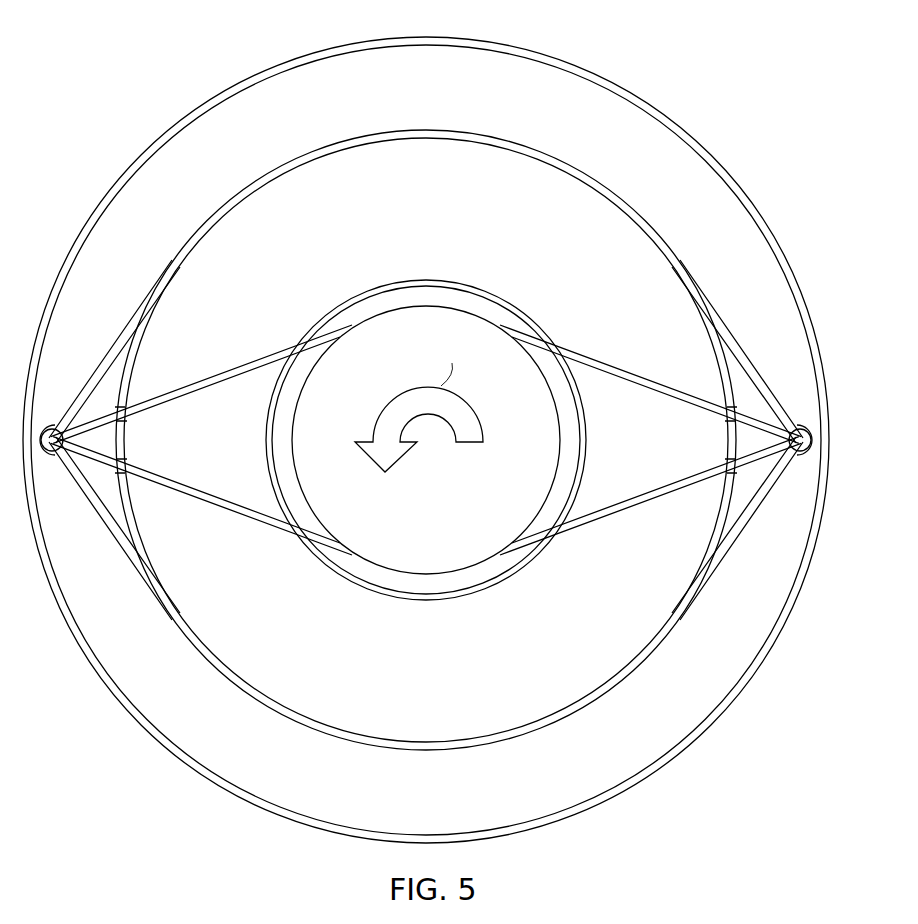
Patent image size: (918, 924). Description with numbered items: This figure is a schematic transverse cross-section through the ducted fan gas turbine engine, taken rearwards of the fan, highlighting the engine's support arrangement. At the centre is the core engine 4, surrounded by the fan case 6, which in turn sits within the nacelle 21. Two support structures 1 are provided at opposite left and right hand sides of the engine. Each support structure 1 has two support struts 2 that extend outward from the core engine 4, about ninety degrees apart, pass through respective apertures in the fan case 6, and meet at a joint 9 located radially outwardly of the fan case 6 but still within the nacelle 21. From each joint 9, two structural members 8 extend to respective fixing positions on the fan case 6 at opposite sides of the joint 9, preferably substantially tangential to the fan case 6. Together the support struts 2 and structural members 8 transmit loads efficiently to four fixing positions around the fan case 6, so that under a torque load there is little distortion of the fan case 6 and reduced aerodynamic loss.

The nacelle 21 is at (251, 81).
The fan case 6 is at (230, 201).
The structural members 8 is at (99, 361).
The joint 9 is at (50, 428).
The support struts 2 is at (198, 379).
The support structure 1 is at (615, 535).
The core engine 4 is at (437, 502).